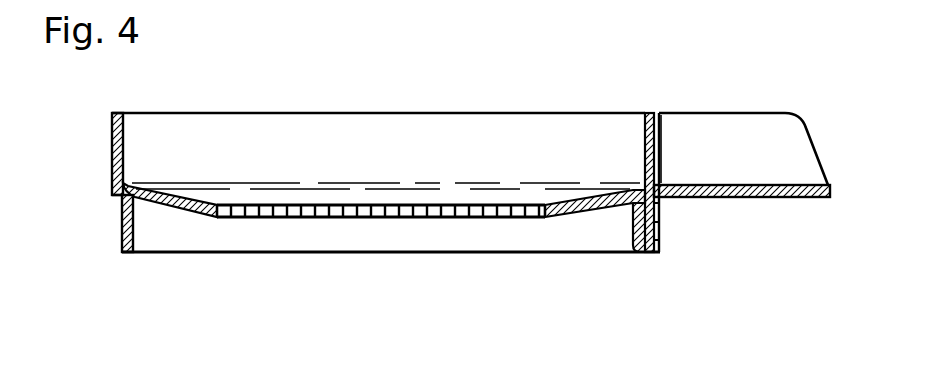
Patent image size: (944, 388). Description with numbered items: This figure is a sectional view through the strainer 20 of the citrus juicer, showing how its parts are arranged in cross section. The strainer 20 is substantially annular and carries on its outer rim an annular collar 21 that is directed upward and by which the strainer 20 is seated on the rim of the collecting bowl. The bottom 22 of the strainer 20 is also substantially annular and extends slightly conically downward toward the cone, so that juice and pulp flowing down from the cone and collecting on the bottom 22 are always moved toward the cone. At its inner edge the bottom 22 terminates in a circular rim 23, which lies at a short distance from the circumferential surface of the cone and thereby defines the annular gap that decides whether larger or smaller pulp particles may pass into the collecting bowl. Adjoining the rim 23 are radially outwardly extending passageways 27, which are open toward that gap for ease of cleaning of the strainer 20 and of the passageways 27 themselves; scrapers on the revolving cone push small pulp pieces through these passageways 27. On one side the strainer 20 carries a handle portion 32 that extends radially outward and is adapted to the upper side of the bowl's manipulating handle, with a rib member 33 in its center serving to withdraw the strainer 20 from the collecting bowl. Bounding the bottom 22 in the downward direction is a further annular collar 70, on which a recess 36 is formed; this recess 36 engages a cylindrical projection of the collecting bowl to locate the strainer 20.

The strainer 20 is at (541, 105).
The annular collar 21 is at (117, 112).
The bottom 22 is at (170, 210).
The circular rim 23 is at (248, 216).
The passageways 27 is at (215, 212).
The handle portion 32 is at (783, 198).
The rib member 33 is at (733, 130).
The recess 36 is at (658, 222).
The annular collar 70 is at (632, 240).